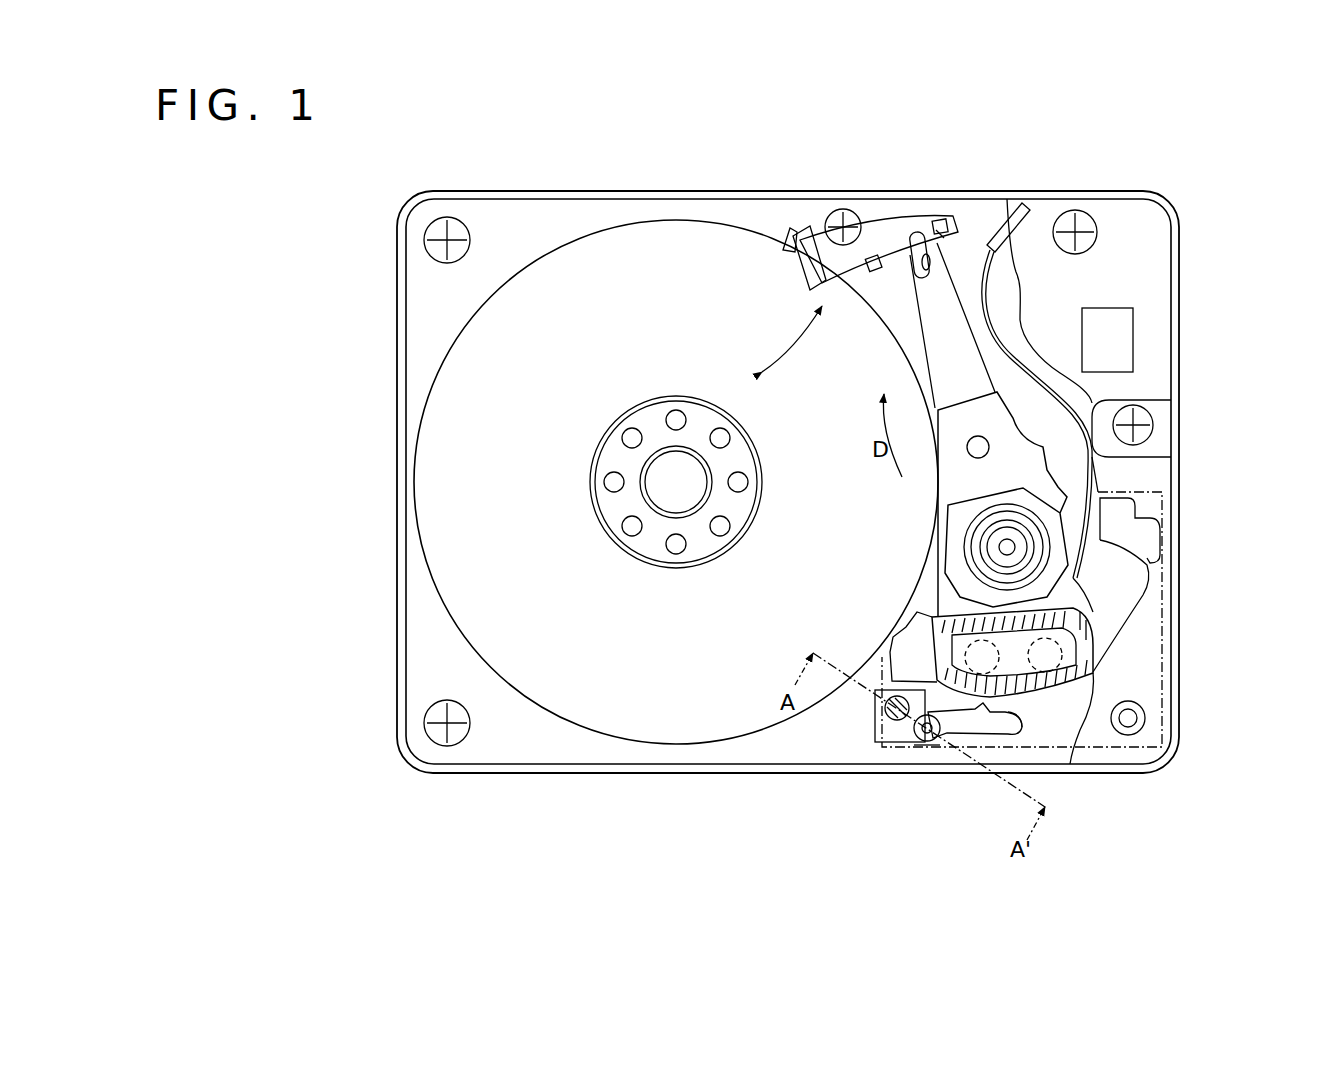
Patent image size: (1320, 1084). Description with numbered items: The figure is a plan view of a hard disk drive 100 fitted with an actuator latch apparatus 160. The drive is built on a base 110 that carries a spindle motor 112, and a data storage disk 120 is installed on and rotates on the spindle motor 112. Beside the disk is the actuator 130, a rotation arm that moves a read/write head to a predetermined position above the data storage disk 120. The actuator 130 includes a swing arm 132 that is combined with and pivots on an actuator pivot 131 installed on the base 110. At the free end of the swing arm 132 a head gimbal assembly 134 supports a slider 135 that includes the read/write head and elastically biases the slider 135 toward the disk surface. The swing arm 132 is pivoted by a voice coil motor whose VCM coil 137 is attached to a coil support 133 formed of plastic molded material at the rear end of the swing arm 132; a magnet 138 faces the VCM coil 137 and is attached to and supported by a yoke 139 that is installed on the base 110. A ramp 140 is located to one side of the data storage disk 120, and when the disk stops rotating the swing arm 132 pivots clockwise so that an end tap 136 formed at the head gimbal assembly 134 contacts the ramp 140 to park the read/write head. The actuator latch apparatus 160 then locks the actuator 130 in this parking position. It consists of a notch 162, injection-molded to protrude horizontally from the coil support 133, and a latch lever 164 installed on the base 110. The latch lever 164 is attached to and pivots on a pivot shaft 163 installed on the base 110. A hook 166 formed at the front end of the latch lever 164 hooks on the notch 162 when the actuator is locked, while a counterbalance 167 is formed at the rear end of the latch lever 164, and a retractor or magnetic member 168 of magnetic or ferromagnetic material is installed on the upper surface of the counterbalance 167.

The hard disk drive 100 is at (484, 166).
The base 110 is at (583, 757).
The spindle motor 112 is at (617, 458).
The data storage disk 120 is at (650, 240).
The actuator 130 is at (1040, 478).
The actuator pivot 131 is at (1005, 547).
The swing arm 132 is at (952, 472).
The coil support 133 is at (1093, 717).
The head gimbal assembly 134 is at (933, 302).
The slider 135 is at (942, 228).
The end tap 136 is at (917, 230).
The VCM coil 137 is at (1083, 690).
The magnet 138 is at (1143, 593).
The yoke 139 is at (1130, 527).
The ramp 140 is at (880, 242).
The actuator latch apparatus 160 is at (976, 691).
The notch 162 is at (982, 716).
The pivot shaft 163 is at (926, 741).
The latch lever 164 is at (955, 752).
The hook 166 is at (1020, 727).
The counterbalance 167 is at (898, 735).
The magnetic member 168 is at (885, 720).